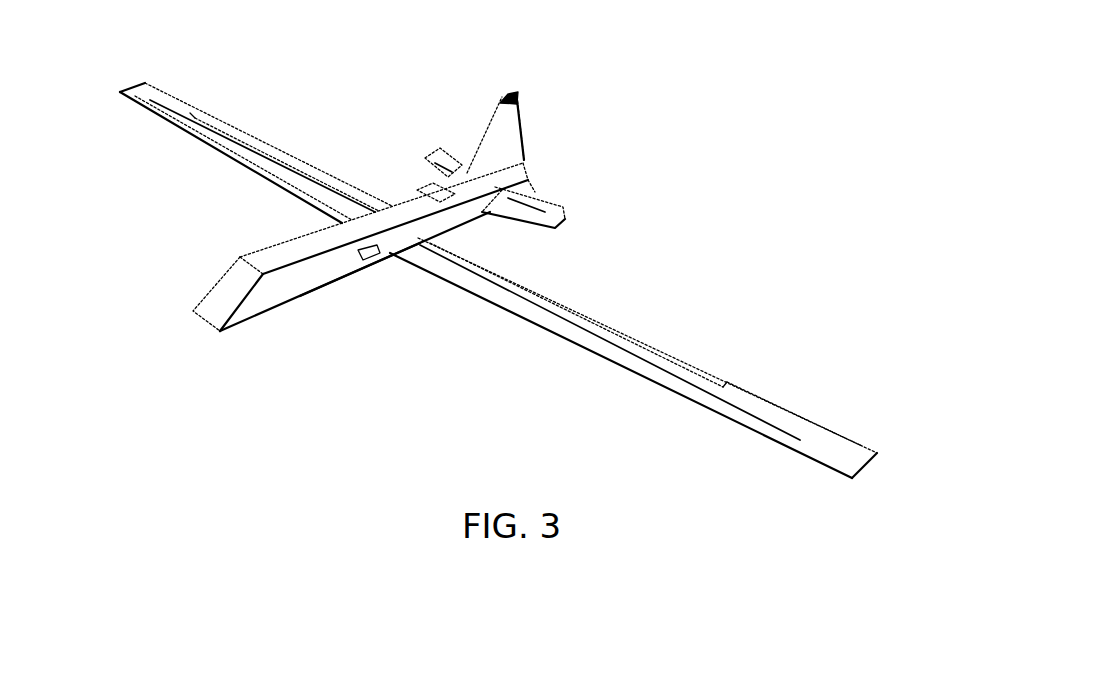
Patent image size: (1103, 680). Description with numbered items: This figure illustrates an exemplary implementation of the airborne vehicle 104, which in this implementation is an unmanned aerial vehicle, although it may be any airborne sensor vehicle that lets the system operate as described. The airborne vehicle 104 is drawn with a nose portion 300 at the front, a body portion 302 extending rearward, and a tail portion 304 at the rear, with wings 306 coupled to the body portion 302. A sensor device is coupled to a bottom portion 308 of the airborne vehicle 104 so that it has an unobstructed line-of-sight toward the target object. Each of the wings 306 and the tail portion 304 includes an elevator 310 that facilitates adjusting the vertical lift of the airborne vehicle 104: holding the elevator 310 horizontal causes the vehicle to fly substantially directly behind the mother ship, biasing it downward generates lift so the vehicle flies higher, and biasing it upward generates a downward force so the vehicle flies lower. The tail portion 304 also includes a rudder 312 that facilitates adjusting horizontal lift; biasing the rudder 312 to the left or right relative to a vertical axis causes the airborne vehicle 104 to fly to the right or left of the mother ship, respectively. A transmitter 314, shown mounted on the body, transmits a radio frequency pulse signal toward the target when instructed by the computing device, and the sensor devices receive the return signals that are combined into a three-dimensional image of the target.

The airborne vehicle 104 is at (762, 28).
The nose portion 300 is at (155, 262).
The body portion 302 is at (280, 213).
The tail portion 304 is at (462, 74).
The wings 306 is at (148, 84).
The bottom portion 308 is at (346, 292).
The elevator 310 is at (263, 142).
The rudder 312 is at (518, 122).
The transmitter 314 is at (365, 260).